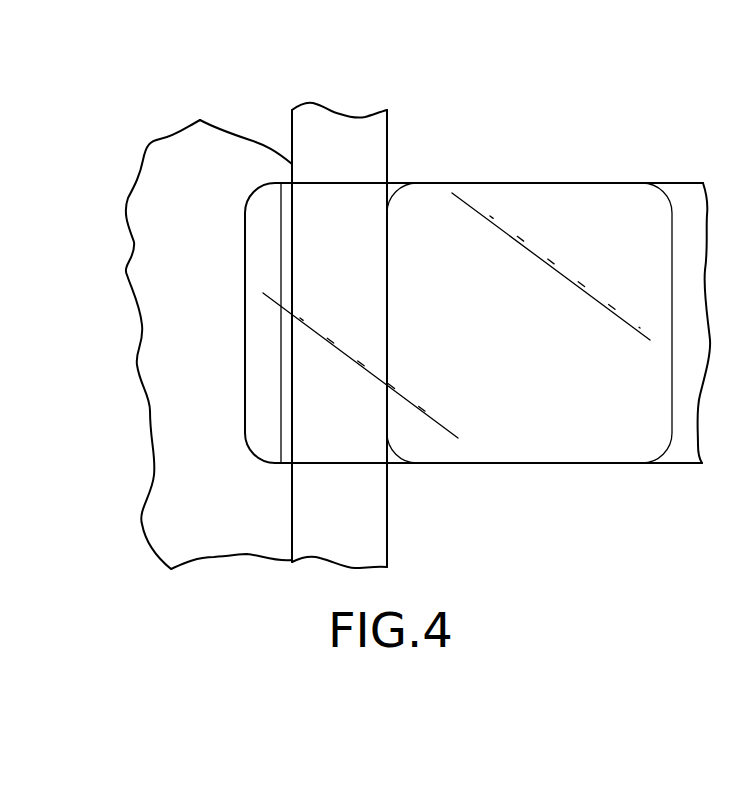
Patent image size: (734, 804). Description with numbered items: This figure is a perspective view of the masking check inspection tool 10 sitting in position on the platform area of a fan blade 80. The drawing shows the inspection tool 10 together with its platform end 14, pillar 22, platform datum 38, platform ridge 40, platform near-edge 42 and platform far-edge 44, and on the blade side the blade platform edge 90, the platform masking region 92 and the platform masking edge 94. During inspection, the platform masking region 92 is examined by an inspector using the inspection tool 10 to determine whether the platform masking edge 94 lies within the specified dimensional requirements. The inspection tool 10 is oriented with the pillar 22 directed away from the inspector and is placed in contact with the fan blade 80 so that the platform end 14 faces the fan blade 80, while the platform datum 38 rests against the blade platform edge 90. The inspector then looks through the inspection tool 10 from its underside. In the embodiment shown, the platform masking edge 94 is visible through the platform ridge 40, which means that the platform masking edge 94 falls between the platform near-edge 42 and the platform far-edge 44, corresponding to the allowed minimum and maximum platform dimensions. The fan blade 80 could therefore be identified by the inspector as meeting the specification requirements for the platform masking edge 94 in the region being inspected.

The inspection tool 10 is at (643, 164).
The platform end 14 is at (206, 300).
The pillar 22 is at (535, 285).
The platform datum 38 is at (388, 273).
The platform ridge 40 is at (283, 466).
The platform near-edge 42 is at (292, 388).
The platform far-edge 44 is at (281, 342).
The fan blade 80 is at (200, 121).
The blade platform edge 90 is at (387, 130).
The platform masking region 92 is at (335, 137).
The platform masking edge 94 is at (292, 137).